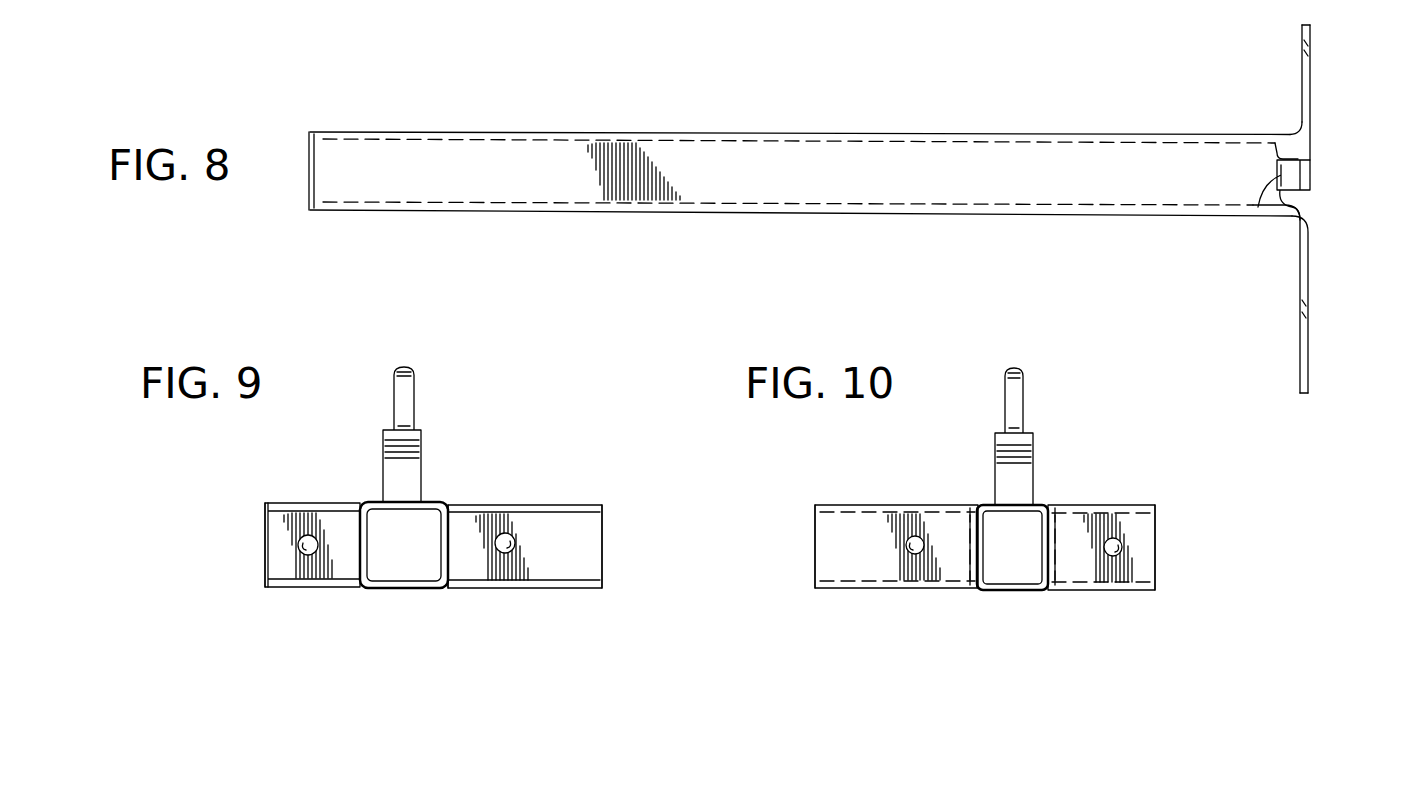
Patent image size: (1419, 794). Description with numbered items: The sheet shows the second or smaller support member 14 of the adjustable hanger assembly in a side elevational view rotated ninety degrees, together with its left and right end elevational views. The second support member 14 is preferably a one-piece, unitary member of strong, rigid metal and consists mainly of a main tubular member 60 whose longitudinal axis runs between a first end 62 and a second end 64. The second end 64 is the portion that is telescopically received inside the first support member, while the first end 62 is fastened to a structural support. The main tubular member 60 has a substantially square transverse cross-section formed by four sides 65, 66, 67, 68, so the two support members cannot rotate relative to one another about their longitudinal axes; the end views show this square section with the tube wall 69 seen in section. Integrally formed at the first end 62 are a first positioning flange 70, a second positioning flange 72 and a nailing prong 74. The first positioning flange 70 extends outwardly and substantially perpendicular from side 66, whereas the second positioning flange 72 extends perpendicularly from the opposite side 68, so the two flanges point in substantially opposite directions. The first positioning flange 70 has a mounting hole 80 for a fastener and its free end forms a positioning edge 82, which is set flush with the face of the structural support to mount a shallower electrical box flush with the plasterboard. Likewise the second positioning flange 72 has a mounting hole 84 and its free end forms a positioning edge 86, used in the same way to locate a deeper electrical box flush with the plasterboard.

In FIG. 8, the second support member 14 is at (857, 119).
In FIG. 9, the second support member 14 is at (520, 399).
In FIG. 10, the second support member 14 is at (1133, 412).
In FIG. 8, the main tubular member 60 is at (527, 135).
In FIG. 9, the main tubular member 60 is at (447, 502).
In FIG. 10, the main tubular member 60 is at (978, 505).
In FIG. 8, the first end 62 is at (1290, 128).
In FIG. 8, the second end 64 is at (308, 140).
In FIG. 8, the side 65 is at (750, 0).
In FIG. 9, the side 65 is at (412, 590).
In FIG. 10, the side 65 is at (1022, 592).
In FIG. 8, the side 66 is at (742, 133).
In FIG. 9, the side 66 is at (360, 557).
In FIG. 10, the side 66 is at (1057, 557).
In FIG. 8, the side 67 is at (763, 183).
In FIG. 9, the side 67 is at (430, 500).
In FIG. 10, the side 67 is at (1045, 503).
In FIG. 8, the side 68 is at (763, 212).
In FIG. 9, the side 68 is at (450, 560).
In FIG. 10, the side 68 is at (968, 557).
In FIG. 8, the tube wall 69 is at (1262, 3).
In FIG. 8, the first positioning flange 70 is at (1312, 88).
In FIG. 9, the first positioning flange 70 is at (285, 503).
In FIG. 10, the first positioning flange 70 is at (1127, 505).
In FIG. 8, the second positioning flange 72 is at (1308, 333).
In FIG. 9, the second positioning flange 72 is at (557, 503).
In FIG. 10, the second positioning flange 72 is at (845, 503).
In FIG. 8, the nailing prong 74 is at (1262, 207).
In FIG. 9, the nailing prong 74 is at (413, 383).
In FIG. 10, the nailing prong 74 is at (1023, 393).
In FIG. 8, the mounting hole 80 is at (1315, 42).
In FIG. 9, the mounting hole 80 is at (303, 547).
In FIG. 10, the mounting hole 80 is at (1123, 548).
In FIG. 8, the positioning edge 82 is at (1310, 22).
In FIG. 9, the positioning edge 82 is at (265, 547).
In FIG. 10, the positioning edge 82 is at (1155, 528).
In FIG. 8, the mounting hole 84 is at (1305, 305).
In FIG. 9, the mounting hole 84 is at (515, 544).
In FIG. 10, the mounting hole 84 is at (913, 546).
In FIG. 8, the positioning edge 86 is at (1307, 392).
In FIG. 9, the positioning edge 86 is at (603, 528).
In FIG. 10, the positioning edge 86 is at (815, 528).